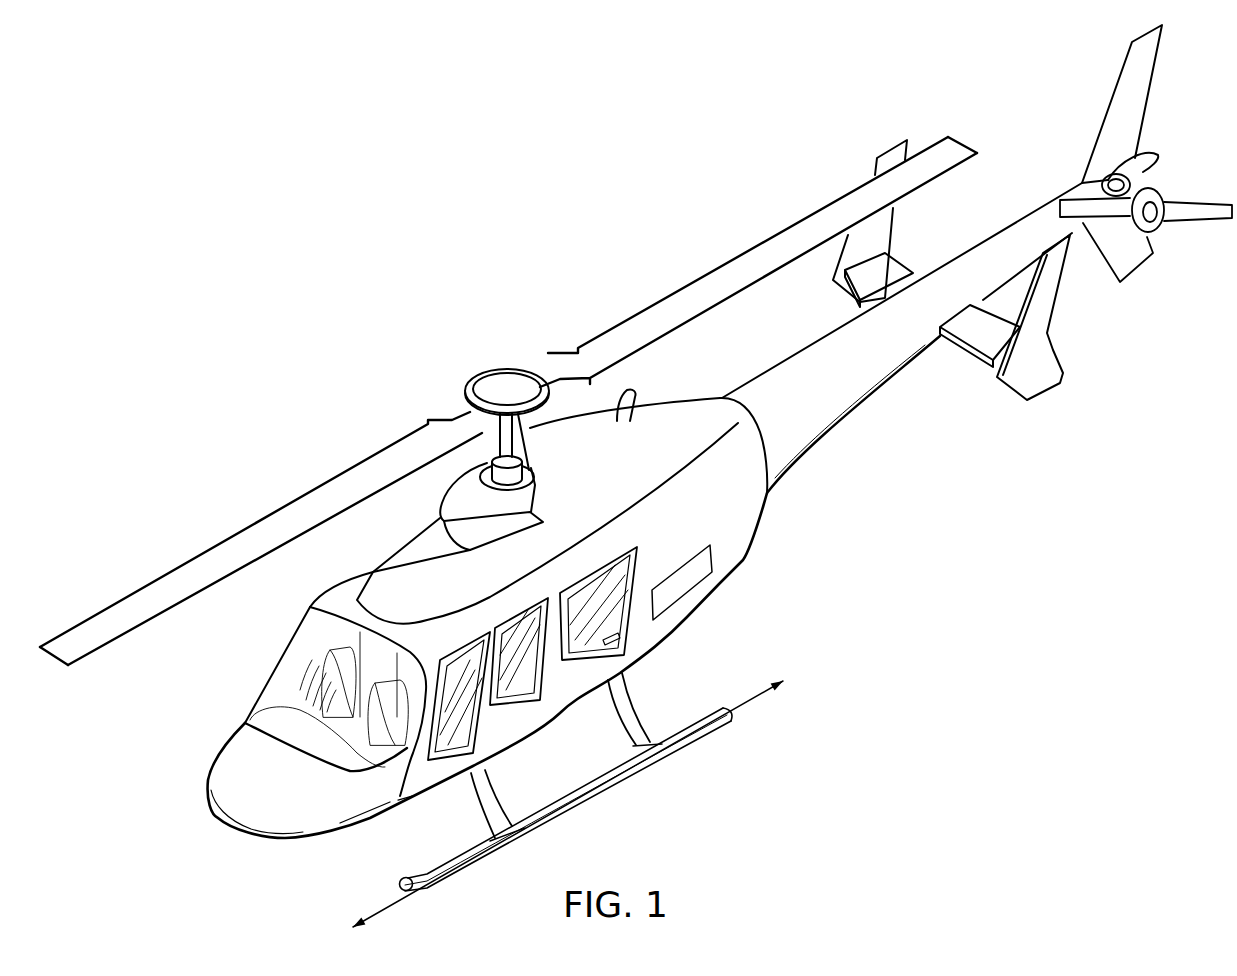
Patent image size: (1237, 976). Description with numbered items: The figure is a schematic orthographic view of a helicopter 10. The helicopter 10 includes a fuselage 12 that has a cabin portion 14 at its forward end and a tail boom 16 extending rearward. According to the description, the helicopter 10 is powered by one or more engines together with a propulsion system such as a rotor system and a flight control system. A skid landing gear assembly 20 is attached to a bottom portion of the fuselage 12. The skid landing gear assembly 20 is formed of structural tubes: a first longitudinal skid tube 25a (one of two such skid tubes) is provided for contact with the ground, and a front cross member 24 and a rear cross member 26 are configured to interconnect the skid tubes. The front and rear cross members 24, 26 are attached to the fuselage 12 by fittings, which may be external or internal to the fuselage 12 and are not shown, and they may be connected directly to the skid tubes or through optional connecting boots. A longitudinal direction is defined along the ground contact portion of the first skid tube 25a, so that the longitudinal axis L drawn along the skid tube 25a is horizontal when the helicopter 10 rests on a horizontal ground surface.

The helicopter 10 is at (409, 193).
The fuselage 12 is at (879, 508).
The cabin portion 14 is at (205, 797).
The tail boom 16 is at (850, 390).
The skid landing gear assembly 20 is at (624, 796).
The front cross member 24 is at (498, 791).
The rear cross member 26 is at (636, 710).
The first longitudinal skid tube 25a is at (703, 735).
The longitudinal axis L is at (401, 917).